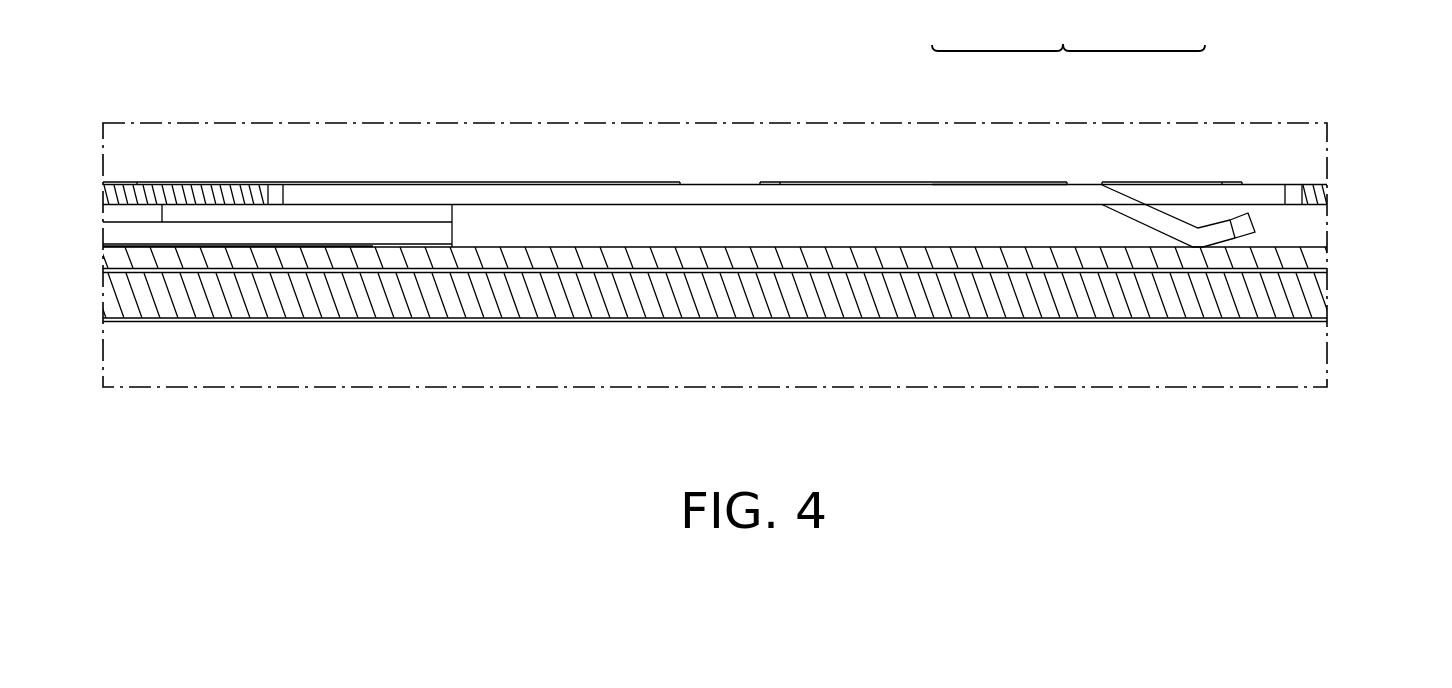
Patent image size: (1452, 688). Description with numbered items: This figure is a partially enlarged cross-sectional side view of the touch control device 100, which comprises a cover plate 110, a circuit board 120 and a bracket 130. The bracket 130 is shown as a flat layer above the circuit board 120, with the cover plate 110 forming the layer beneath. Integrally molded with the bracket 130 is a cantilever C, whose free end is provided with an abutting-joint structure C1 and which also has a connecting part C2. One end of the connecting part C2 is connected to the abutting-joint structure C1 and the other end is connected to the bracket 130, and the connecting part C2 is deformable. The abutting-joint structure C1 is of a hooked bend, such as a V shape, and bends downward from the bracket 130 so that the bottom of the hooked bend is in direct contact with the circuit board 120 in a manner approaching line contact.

The touch control device 100 is at (1318, 456).
The cover plate 110 is at (1315, 294).
The circuit board 120 is at (1313, 255).
The bracket 130 is at (1318, 191).
The cantilever C is at (1068, 28).
The abutting-joint structure C1 is at (1157, 212).
The connecting part C2 is at (955, 195).